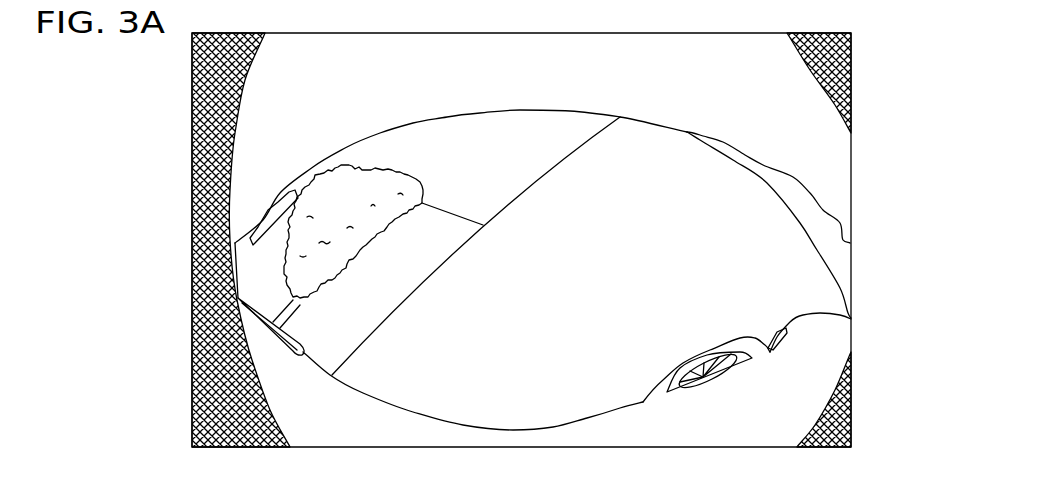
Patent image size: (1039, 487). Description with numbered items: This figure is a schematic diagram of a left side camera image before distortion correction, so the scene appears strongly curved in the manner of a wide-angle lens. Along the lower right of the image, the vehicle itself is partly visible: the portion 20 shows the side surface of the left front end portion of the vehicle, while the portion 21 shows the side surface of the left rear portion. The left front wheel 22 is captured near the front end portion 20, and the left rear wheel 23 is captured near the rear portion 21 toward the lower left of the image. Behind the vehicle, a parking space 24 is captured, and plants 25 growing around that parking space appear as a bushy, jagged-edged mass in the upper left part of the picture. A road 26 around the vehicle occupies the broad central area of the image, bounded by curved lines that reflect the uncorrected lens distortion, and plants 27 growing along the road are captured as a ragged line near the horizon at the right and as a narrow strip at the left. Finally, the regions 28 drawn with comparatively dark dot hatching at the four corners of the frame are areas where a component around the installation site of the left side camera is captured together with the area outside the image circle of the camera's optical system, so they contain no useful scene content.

The side surface of a left front end portion 20 is at (826, 328).
The side surface of a left rear portion 21 is at (263, 330).
The left front wheel 22 is at (757, 352).
The left rear wheel 23 is at (270, 323).
The parking space 24 is at (266, 260).
The plants around the parking space 25 is at (337, 183).
The road 26 is at (740, 268).
The plants growing along the road 27 is at (255, 213).
The regions indicated by dark dot hatchings 28 is at (227, 92).